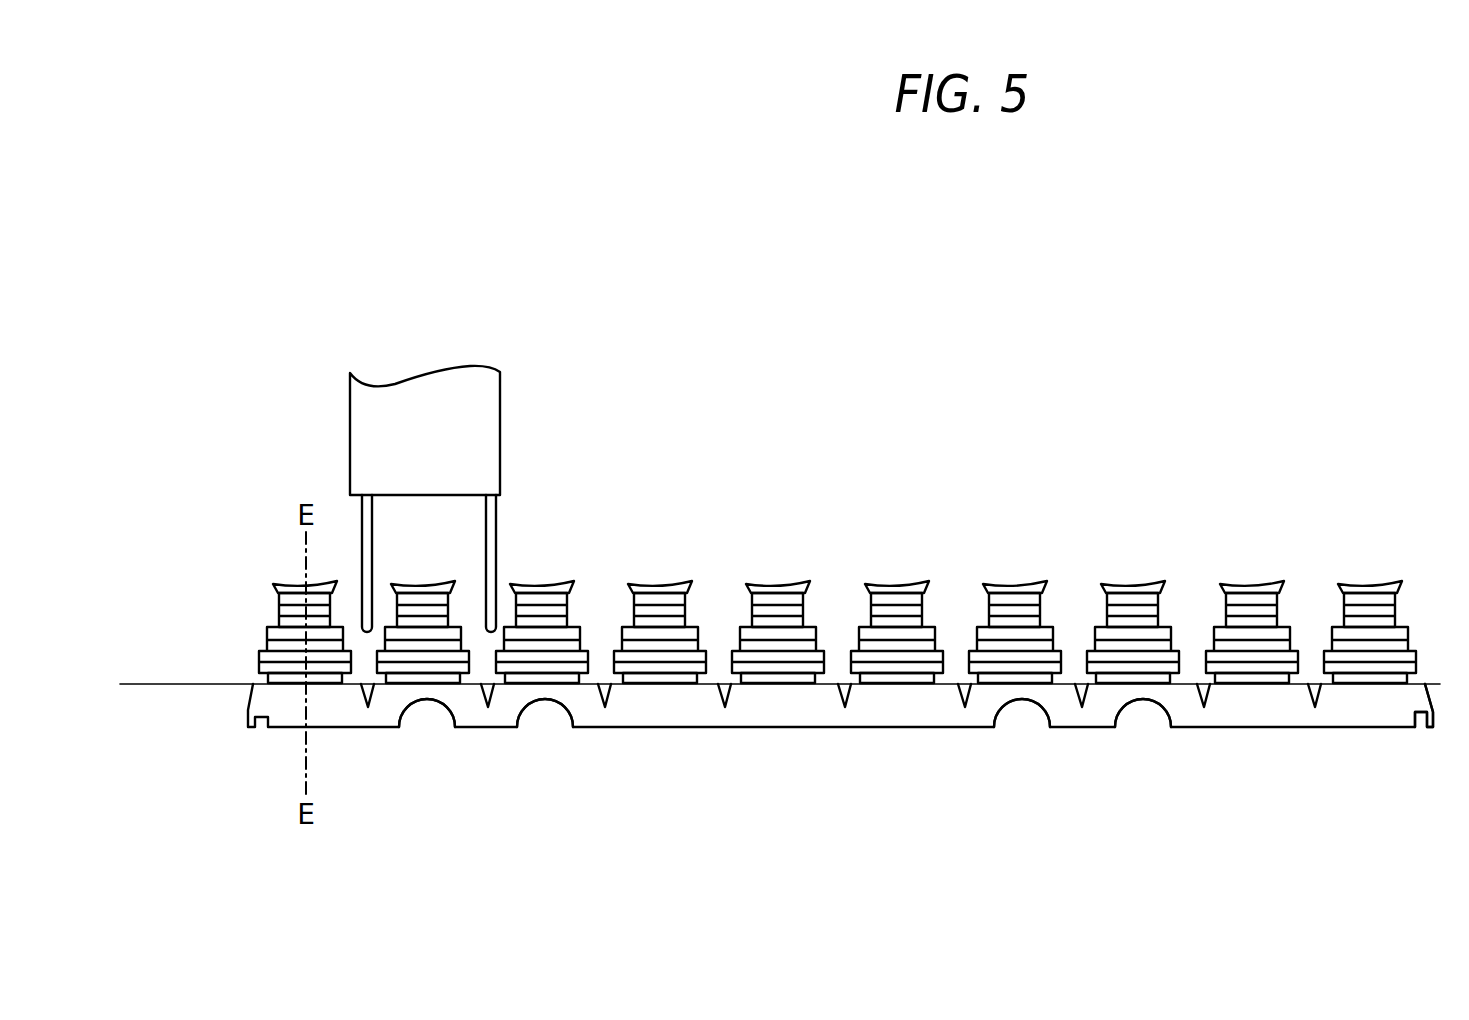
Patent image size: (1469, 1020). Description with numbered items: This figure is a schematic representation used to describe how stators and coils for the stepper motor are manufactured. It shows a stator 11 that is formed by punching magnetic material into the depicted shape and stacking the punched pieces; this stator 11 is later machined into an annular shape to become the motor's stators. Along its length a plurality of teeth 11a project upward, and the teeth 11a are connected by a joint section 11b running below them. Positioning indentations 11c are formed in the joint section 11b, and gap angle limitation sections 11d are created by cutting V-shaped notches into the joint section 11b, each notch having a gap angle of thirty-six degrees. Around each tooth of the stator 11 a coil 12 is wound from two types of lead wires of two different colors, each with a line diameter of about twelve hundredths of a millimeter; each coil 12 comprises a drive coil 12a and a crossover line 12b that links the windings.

The stator 11 is at (942, 715).
The teeth 11a is at (1355, 583).
The joint section 11b is at (1388, 705).
The positioning indentations 11c is at (1110, 790).
The gap angle limitation sections 11d is at (1330, 790).
The coil 12 is at (897, 657).
The drive coil 12a is at (1346, 607).
The crossover line 12b is at (1315, 684).